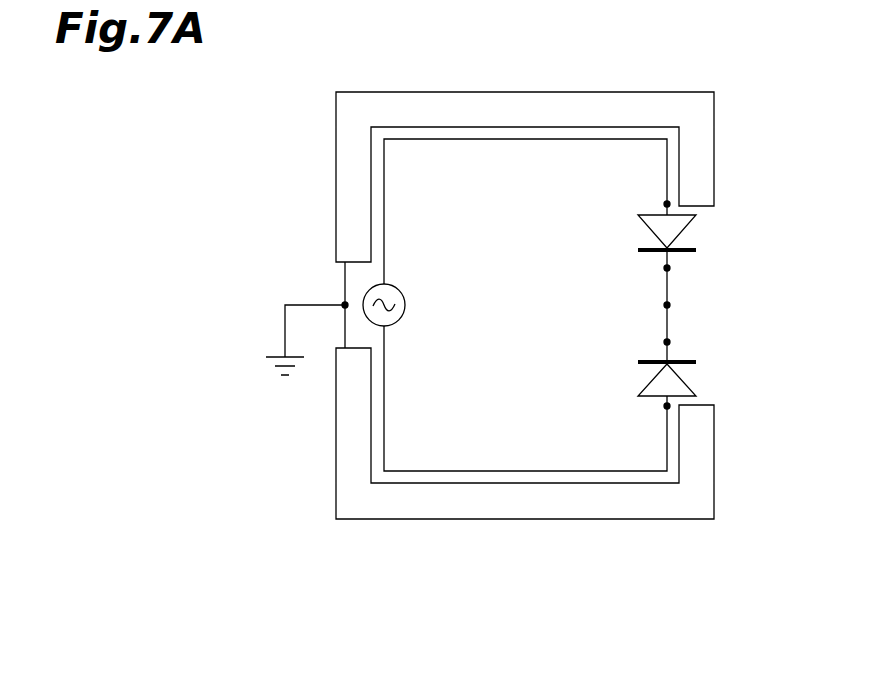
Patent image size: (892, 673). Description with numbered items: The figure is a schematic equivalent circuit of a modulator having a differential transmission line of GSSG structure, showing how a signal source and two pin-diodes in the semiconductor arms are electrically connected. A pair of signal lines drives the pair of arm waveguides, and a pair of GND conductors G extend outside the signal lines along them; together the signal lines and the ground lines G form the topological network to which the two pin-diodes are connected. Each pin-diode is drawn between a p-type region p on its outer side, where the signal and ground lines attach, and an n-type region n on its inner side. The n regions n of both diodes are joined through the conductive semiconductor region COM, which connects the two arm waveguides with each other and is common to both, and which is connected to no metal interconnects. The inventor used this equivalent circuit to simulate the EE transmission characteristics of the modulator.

The GND conductor G is at (577, 91).
The p-type region p is at (664, 204).
The n-type region n is at (664, 268).
The conductive semiconductor region COM is at (664, 305).